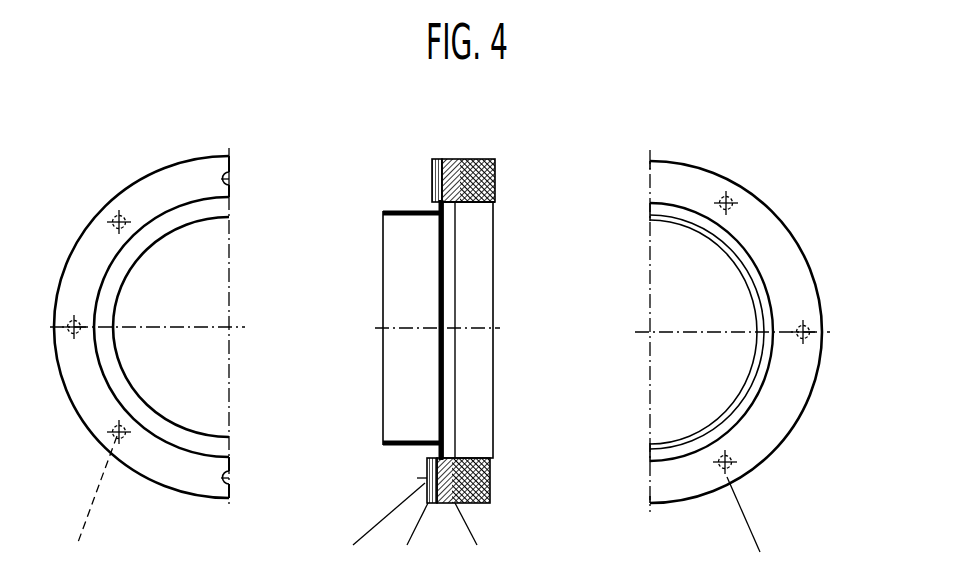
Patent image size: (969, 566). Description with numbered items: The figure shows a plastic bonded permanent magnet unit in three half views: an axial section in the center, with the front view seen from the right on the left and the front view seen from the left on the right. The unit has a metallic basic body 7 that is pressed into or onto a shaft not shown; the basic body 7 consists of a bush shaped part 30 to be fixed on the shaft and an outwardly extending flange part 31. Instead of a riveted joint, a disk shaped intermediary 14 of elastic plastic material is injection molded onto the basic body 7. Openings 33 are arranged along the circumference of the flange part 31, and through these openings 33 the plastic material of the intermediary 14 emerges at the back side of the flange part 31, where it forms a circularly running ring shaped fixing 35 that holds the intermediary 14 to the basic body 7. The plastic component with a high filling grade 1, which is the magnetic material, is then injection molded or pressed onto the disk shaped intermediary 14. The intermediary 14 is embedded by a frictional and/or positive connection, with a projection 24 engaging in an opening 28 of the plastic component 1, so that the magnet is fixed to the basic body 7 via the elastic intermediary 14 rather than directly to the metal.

The plastic component with a high filling grade 1 is at (182, 187).
The basic body 7 is at (163, 233).
The disk shaped intermediary 14 is at (699, 188).
The projection 24 is at (116, 214).
The opening 28 is at (495, 195).
The bush shaped part 30 is at (410, 218).
The flange part 31 is at (433, 161).
The openings 33 is at (730, 200).
The ring shaped fixing 35 is at (772, 420).